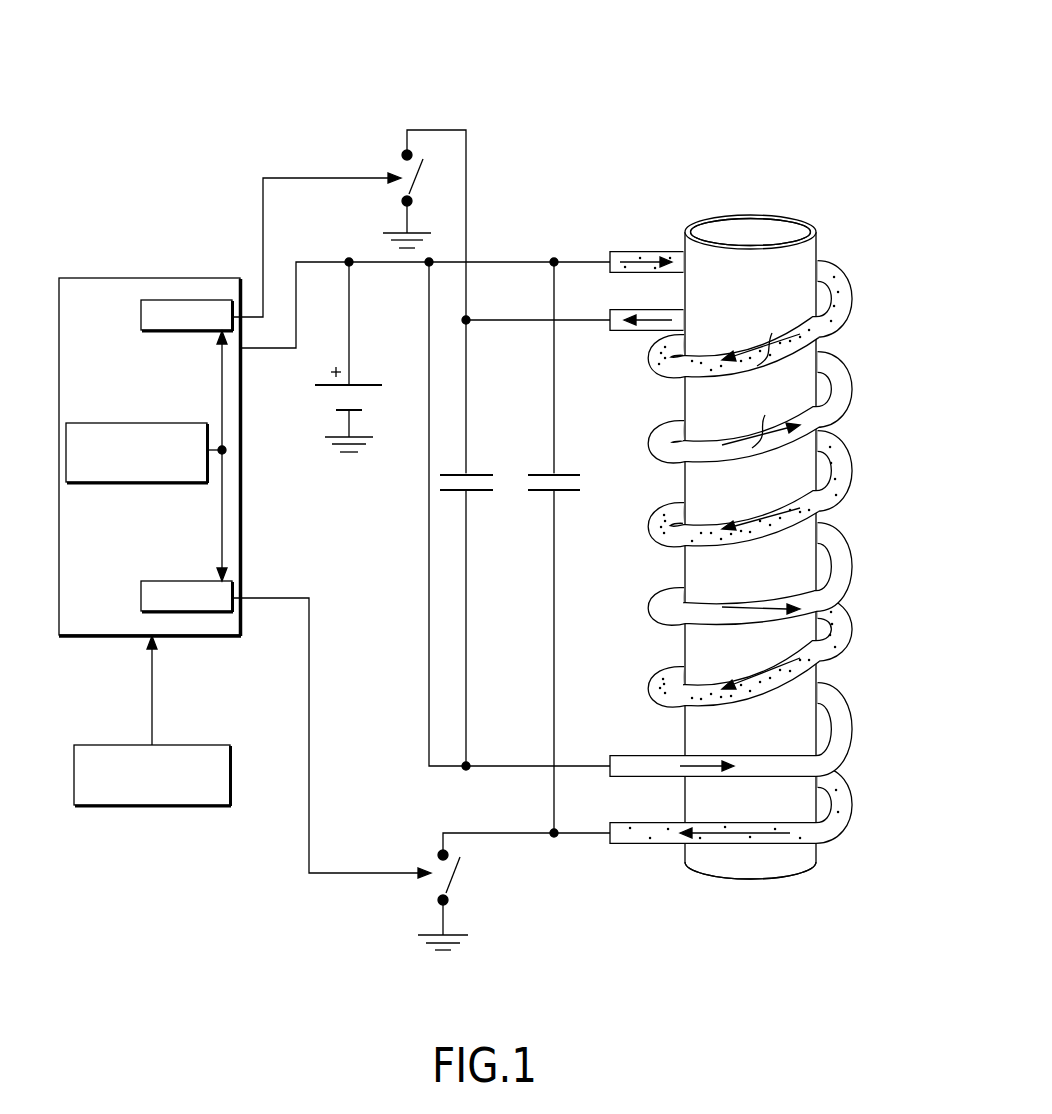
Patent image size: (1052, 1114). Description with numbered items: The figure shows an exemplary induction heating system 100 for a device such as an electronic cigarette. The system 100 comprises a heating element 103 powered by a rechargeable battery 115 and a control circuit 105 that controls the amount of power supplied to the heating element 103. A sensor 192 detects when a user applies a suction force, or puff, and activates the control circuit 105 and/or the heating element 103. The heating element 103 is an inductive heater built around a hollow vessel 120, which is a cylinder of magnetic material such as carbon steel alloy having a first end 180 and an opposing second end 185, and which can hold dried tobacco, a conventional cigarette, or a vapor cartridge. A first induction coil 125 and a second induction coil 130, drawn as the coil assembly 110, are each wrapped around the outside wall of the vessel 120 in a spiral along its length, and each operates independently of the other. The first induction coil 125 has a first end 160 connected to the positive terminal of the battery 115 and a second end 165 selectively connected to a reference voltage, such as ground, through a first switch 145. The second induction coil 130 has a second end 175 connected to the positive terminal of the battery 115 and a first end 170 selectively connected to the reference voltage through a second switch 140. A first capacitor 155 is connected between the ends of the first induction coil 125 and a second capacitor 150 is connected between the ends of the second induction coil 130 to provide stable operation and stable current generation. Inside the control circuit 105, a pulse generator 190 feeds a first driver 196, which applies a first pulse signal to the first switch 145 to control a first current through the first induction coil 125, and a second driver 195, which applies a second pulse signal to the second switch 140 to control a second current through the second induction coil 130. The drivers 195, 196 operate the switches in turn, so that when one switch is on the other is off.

The system 100 is at (113, 72).
The heating element 103 is at (770, 546).
The control circuit 105 is at (107, 277).
The coil 110 is at (755, 555).
The rechargeable battery 115 is at (362, 385).
The hollow vessel 120 is at (785, 231).
The first induction coil 125 is at (755, 555).
The second induction coil 130 is at (742, 543).
The second switch 140 is at (422, 177).
The first switch 145 is at (463, 876).
The second capacitor 150 is at (478, 475).
The first capacitor 155 is at (572, 475).
The first end of the first induction coil 160 is at (630, 252).
The second end of the first induction coil 165 is at (648, 848).
The first end of the second induction coil 170 is at (622, 336).
The second end of the second induction coil 175 is at (631, 756).
The first end of the vessel 180 is at (751, 214).
The second end of the vessel 185 is at (752, 882).
The pulse generator 190 is at (131, 483).
The sensor 192 is at (232, 786).
The second driver 195 is at (193, 300).
The first driver 196 is at (196, 613).